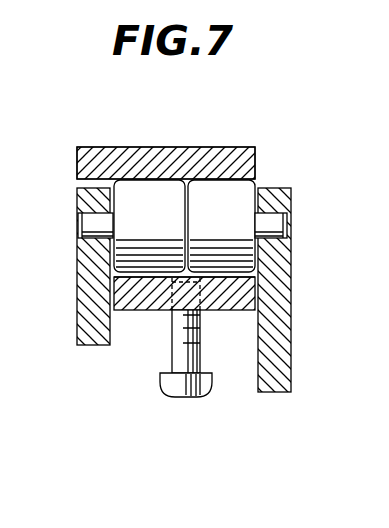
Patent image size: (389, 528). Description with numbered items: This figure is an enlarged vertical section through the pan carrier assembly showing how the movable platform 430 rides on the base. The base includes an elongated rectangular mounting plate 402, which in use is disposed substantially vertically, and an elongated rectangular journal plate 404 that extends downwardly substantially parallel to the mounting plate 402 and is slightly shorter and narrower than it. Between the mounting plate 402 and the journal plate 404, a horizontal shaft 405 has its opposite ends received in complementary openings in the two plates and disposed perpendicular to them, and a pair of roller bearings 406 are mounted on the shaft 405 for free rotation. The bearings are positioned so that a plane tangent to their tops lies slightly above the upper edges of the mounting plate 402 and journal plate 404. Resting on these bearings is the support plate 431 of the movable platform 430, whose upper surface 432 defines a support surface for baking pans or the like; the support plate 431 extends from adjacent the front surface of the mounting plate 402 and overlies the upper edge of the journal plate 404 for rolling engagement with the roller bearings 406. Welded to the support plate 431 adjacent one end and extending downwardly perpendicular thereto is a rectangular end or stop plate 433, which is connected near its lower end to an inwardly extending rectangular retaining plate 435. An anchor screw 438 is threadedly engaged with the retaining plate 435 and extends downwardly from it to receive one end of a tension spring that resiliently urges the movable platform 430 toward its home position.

The movable platform 430 is at (92, 136).
The support plate 431 is at (238, 162).
The upper surface 432 is at (138, 147).
The roller bearings 406 is at (207, 192).
The horizontal shaft 405 is at (88, 223).
The journal plate 404 is at (84, 321).
The mounting plate 402 is at (283, 366).
The stop plate 433 is at (250, 276).
The retaining plate 435 is at (143, 300).
The anchor screw 438 is at (188, 397).